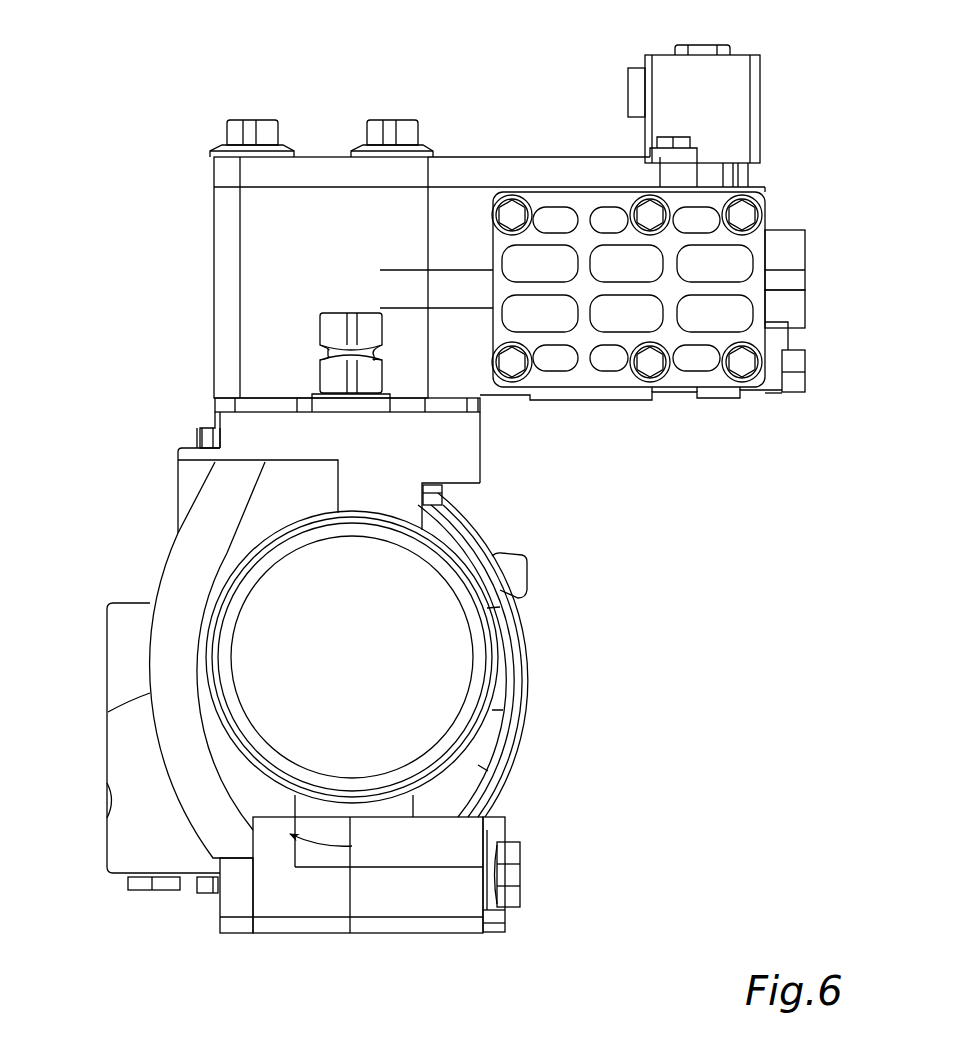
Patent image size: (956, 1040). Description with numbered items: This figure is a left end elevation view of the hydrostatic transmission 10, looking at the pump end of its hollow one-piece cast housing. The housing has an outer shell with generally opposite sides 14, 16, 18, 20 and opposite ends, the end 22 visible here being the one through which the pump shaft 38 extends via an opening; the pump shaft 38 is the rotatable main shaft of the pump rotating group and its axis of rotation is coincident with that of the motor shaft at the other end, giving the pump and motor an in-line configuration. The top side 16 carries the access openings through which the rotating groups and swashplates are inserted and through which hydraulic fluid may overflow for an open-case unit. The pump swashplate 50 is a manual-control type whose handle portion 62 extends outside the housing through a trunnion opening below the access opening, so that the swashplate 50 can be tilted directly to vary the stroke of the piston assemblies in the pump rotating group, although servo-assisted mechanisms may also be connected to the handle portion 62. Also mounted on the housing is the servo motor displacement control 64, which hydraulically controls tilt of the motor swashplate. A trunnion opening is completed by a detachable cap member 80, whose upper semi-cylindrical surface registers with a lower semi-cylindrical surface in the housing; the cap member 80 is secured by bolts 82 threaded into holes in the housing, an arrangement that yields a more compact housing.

The hydrostatic transmission 10 is at (137, 282).
The side 14 is at (340, 933).
The top side 16 is at (515, 623).
The side 18 is at (292, 410).
The side 20 is at (110, 618).
The end 22 is at (253, 530).
The pump shaft 38 is at (253, 603).
The pump swashplate 50 is at (493, 537).
The handle portion 62 is at (330, 318).
The servo motor displacement control 64 is at (785, 350).
The cap member 80 is at (503, 830).
The bolts 82 is at (513, 858).